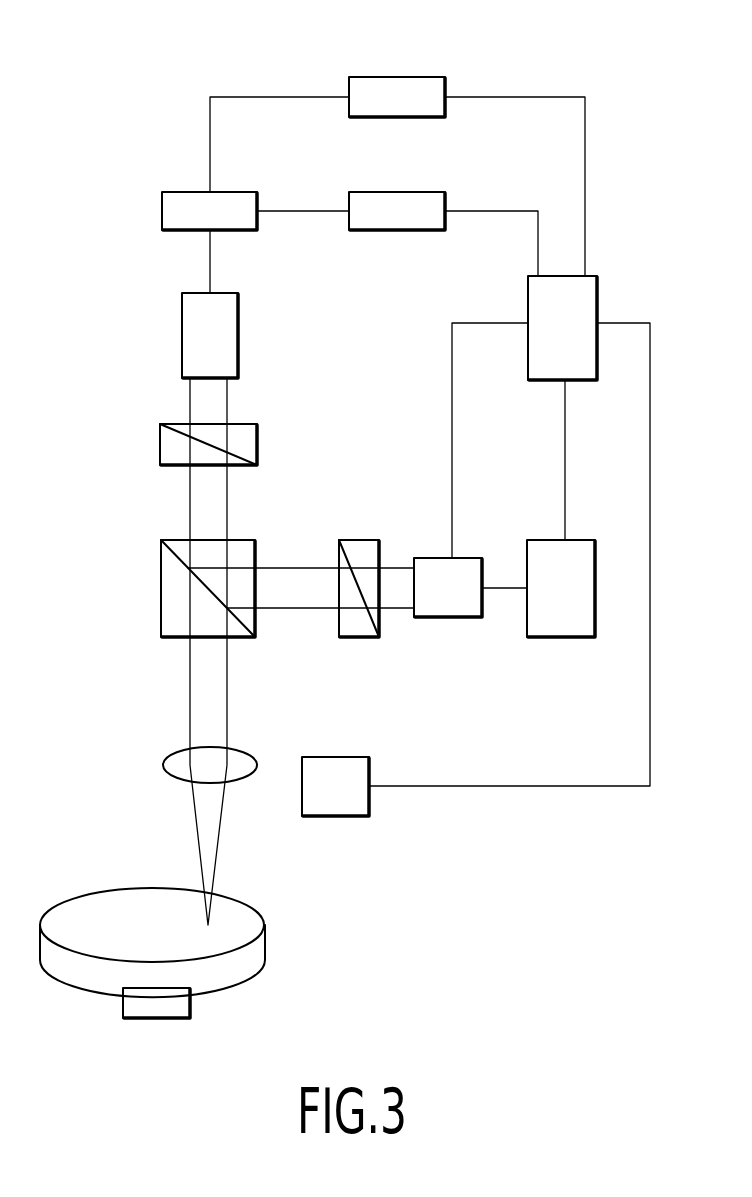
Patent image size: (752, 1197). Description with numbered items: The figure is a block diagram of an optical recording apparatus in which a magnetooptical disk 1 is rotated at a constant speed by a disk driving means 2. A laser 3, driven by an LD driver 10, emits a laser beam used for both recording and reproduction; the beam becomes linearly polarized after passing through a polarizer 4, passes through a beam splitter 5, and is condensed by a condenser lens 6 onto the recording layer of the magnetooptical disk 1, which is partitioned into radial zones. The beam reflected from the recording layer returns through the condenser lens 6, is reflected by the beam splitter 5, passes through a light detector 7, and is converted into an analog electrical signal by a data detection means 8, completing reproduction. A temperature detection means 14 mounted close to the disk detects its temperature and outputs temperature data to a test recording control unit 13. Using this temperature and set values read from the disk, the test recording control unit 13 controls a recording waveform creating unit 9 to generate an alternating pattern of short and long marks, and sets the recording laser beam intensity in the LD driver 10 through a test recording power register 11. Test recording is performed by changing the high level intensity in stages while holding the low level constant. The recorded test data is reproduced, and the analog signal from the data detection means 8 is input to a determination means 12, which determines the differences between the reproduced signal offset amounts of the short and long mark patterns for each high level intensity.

The magnetooptical disk 1 is at (245, 925).
The disk driving means 2 is at (170, 1018).
The laser 3 is at (182, 338).
The polarizer 4 is at (165, 442).
The beam splitter 5 is at (166, 583).
The condenser lens 6 is at (165, 768).
The light detector 7 is at (348, 538).
The data detection means 8 is at (463, 560).
The recording waveform creating unit 9 is at (445, 78).
The LD driver 10 is at (162, 208).
The test recording power register 11 is at (445, 192).
The determination means 12 is at (540, 637).
The test recording control unit 13 is at (597, 290).
The temperature detection means 14 is at (327, 765).